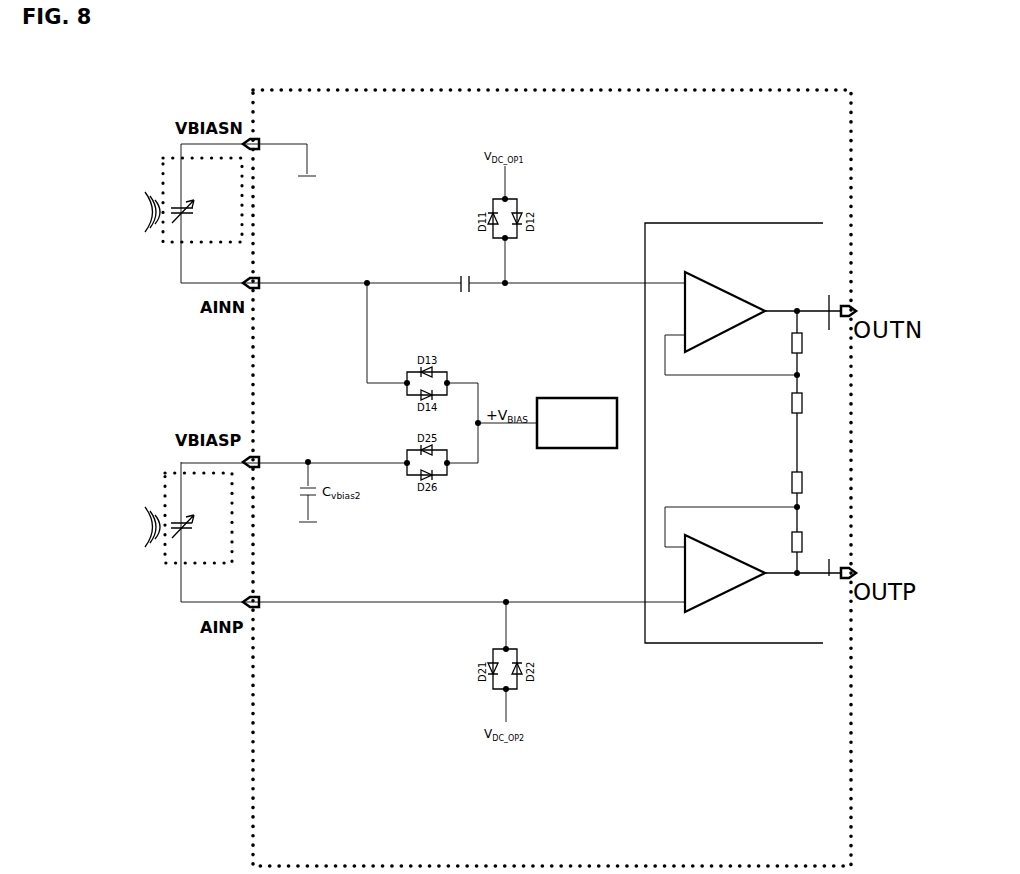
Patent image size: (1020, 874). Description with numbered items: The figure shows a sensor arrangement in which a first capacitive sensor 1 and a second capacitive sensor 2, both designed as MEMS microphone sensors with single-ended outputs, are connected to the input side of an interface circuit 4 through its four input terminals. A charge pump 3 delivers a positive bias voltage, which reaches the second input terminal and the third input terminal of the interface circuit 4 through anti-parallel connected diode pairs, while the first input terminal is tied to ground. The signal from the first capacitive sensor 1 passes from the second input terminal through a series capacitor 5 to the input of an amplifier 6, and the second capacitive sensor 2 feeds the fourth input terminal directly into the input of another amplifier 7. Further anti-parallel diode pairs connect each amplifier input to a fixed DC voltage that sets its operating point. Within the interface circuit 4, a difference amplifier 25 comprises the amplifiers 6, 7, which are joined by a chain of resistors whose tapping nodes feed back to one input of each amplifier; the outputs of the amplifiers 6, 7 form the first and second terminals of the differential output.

The first capacitive sensor 1 is at (163, 244).
The second capacitive sensor 2 is at (165, 556).
The charge pump 3 is at (560, 448).
The interface circuit 4 is at (404, 90).
The series capacitor 5 is at (456, 282).
The amplifier 6 is at (728, 292).
The amplifier 7 is at (725, 556).
The difference amplifier 25 is at (743, 398).